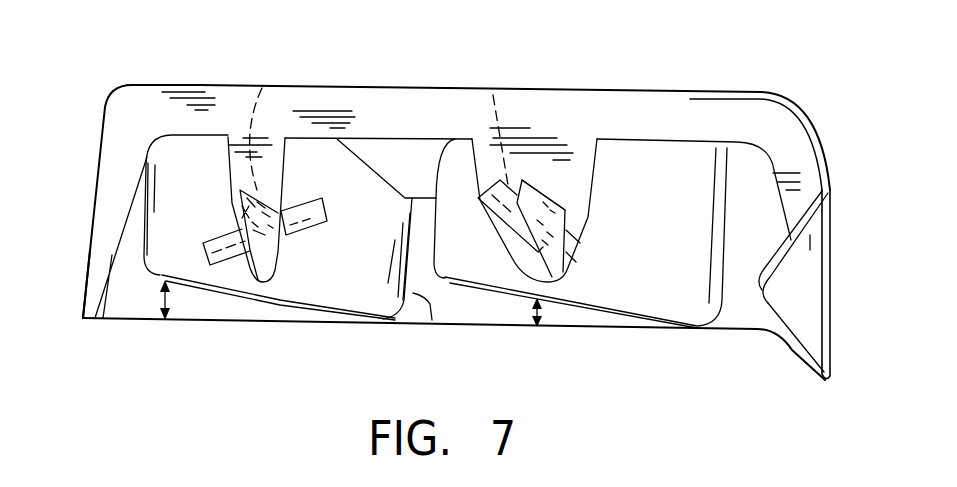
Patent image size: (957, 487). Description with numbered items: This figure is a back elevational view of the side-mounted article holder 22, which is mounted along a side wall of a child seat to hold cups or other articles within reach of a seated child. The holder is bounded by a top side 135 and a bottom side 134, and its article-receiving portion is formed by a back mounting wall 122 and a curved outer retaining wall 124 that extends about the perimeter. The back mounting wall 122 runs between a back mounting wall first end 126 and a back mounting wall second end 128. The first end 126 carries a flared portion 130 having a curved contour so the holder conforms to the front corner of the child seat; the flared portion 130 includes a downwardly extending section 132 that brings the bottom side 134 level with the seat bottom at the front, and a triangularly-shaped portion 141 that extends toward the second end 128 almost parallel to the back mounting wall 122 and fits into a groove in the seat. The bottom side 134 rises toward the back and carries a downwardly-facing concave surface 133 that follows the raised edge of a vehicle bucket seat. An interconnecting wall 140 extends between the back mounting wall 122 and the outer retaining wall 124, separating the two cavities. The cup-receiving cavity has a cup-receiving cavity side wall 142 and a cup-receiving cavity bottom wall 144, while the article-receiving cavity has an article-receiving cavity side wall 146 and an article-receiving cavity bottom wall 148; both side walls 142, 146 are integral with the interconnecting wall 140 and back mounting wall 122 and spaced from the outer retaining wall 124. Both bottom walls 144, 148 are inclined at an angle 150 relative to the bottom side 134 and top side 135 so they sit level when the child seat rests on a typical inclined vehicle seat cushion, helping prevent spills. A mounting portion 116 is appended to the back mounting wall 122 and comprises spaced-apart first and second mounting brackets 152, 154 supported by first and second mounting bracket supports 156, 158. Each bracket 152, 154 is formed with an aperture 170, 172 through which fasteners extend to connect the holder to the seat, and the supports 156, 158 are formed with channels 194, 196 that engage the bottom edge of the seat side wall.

The side-mounted article holder 22 is at (848, 192).
The mounting portion 116 is at (401, 345).
The back mounting wall 122 is at (660, 105).
The outer retaining wall 124 is at (122, 302).
The back mounting wall first end 126 is at (767, 123).
The back mounting wall second end 128 is at (137, 127).
The flared portion 130 is at (818, 140).
The downwardly extending section 132 is at (807, 358).
The downwardly-facing concave surface 133 is at (762, 333).
The bottom side 134 is at (512, 330).
The top side 135 is at (556, 88).
The interconnecting wall 140 is at (432, 320).
The triangularly-shaped portion 141 is at (778, 285).
The cup-receiving cavity side wall 142 is at (185, 240).
The cup-receiving cavity bottom wall 144 is at (310, 308).
The article-receiving cavity side wall 146 is at (683, 253).
The article-receiving cavity bottom wall 148 is at (642, 318).
The angle 150 is at (167, 300).
The first mounting bracket 152 is at (565, 222).
The second mounting bracket 154 is at (273, 255).
The first mounting bracket support 156 is at (502, 220).
The second mounting bracket support 158 is at (210, 240).
The aperture 170 is at (560, 198).
The aperture 172 is at (262, 88).
The channel 194 is at (491, 85).
The channel 196 is at (310, 183).